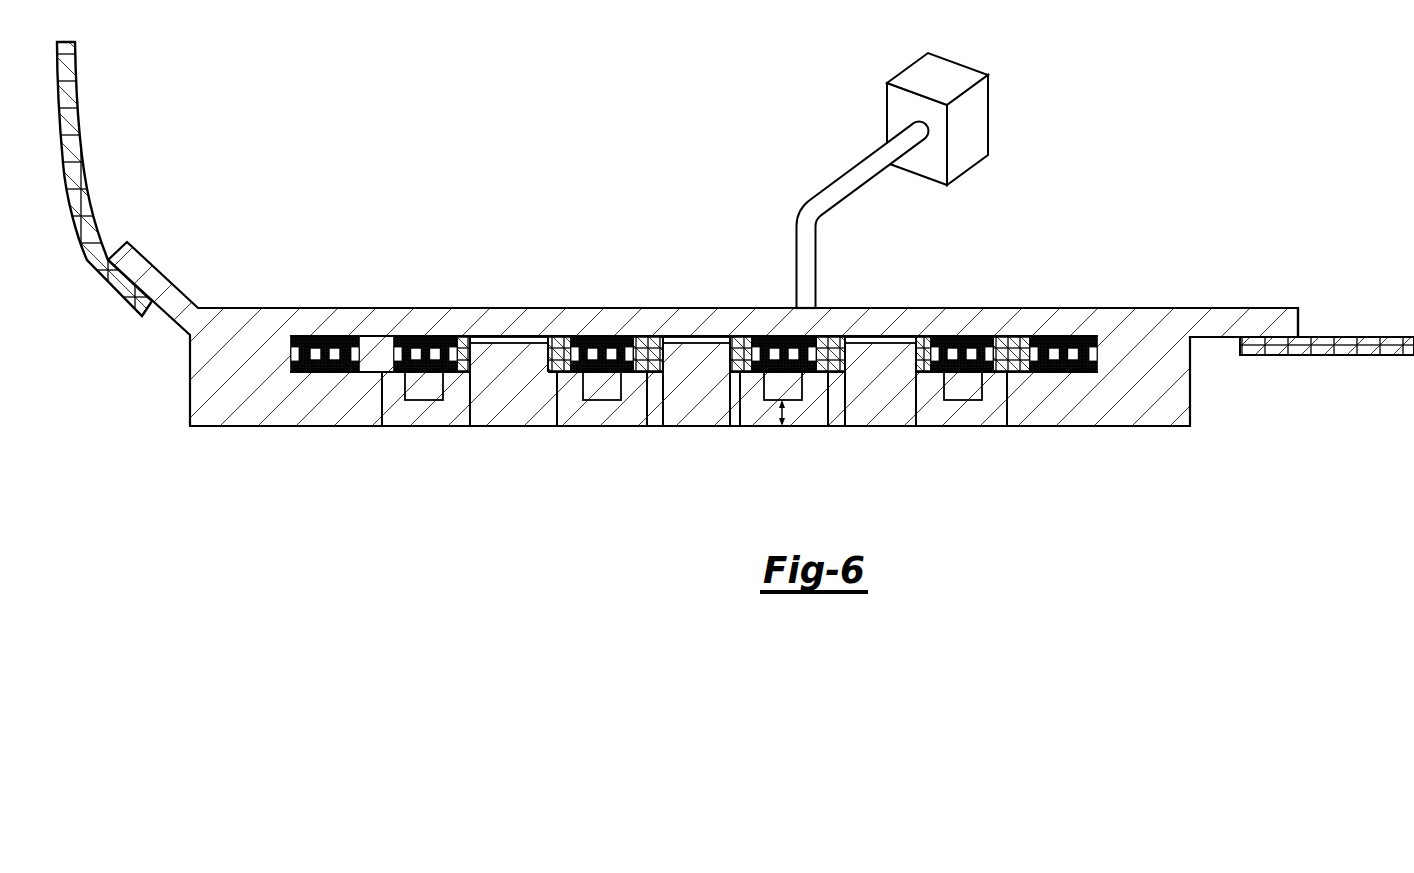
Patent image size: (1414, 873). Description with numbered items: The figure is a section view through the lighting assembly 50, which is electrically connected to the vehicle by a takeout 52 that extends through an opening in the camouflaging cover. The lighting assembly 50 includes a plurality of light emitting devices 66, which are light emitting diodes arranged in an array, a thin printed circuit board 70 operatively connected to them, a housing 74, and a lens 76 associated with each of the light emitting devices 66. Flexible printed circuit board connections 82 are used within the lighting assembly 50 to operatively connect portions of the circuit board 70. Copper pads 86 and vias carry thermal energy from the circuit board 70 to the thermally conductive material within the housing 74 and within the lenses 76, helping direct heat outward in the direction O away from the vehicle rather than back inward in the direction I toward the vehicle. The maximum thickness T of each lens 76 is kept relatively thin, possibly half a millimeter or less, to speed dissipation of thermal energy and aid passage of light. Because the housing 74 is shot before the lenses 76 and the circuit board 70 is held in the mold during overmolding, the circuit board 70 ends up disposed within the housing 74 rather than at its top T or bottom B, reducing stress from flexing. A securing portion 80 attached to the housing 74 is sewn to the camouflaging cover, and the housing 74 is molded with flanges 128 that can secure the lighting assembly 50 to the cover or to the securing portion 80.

The lighting assembly 50 is at (1243, 273).
The takeout 52 is at (848, 167).
The light emitting device 66 is at (423, 402).
The circuit board 70 is at (377, 345).
The housing 74 is at (252, 410).
The lens 76 is at (448, 426).
The securing portion 80 is at (78, 108).
The flexible printed circuit board connection 82 is at (512, 336).
The copper pad 86 is at (326, 373).
The flange 128 is at (1260, 338).
The maximum thickness / top T is at (1053, 308).
The bottom B is at (1055, 427).
The inward direction I is at (693, 230).
The outward direction O is at (693, 445).